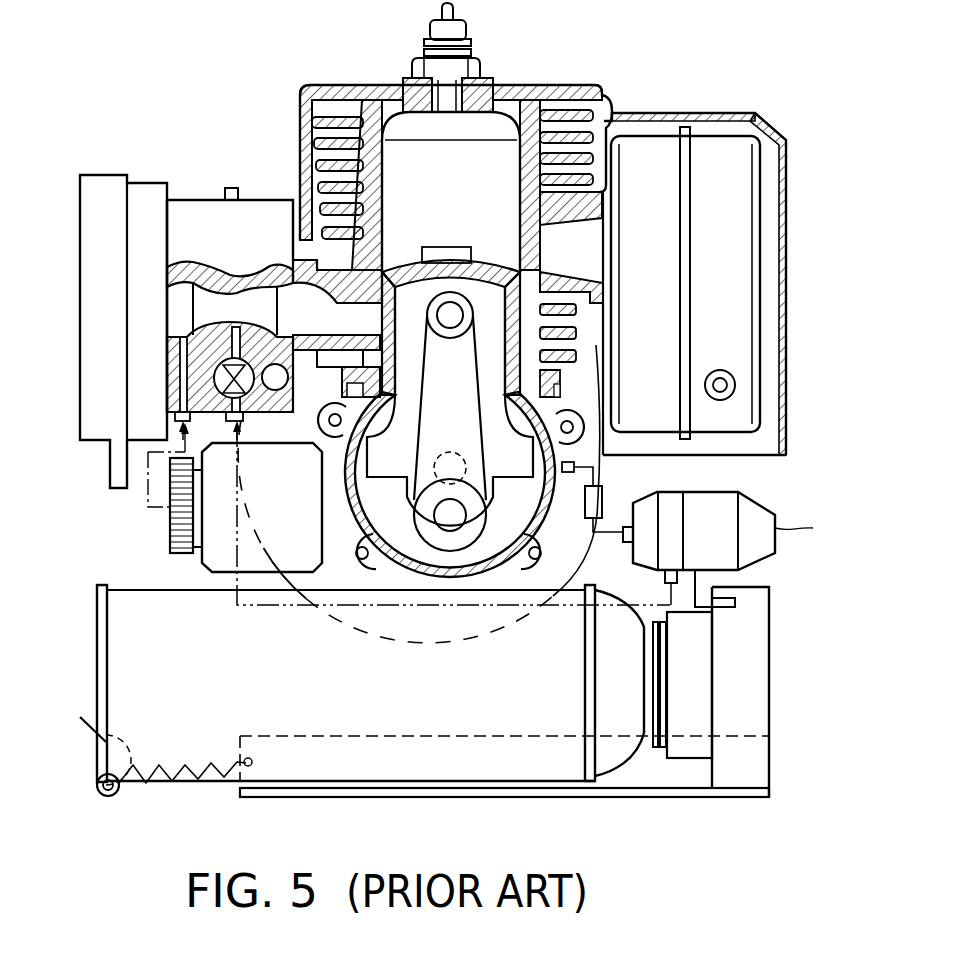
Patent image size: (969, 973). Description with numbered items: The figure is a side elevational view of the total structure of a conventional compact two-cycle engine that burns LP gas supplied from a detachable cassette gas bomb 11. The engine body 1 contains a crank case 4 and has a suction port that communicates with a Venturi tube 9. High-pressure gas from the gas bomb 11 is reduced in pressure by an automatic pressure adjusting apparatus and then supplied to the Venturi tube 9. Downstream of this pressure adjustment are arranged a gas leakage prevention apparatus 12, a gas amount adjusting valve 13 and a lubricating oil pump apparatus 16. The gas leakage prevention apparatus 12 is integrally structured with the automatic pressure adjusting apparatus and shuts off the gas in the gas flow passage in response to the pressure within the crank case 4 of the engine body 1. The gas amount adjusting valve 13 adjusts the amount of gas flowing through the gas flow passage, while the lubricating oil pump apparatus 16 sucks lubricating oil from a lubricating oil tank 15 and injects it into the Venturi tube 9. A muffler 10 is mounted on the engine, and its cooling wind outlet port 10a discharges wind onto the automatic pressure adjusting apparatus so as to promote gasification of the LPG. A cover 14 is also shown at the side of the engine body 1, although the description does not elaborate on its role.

The engine body 1 is at (332, 88).
The crank case 4 is at (547, 413).
The Venturi tube 9 is at (218, 302).
The muffler 10 is at (728, 143).
The cooling wind outlet port 10a is at (756, 456).
The gas bomb 11 is at (508, 758).
The gas leakage prevention apparatus 12 is at (648, 545).
The gas amount adjusting valve 13 is at (213, 378).
The recoil starter cover 14 is at (143, 247).
The lubricating oil tank 15 is at (220, 560).
The lubricating oil pump apparatus 16 is at (208, 198).